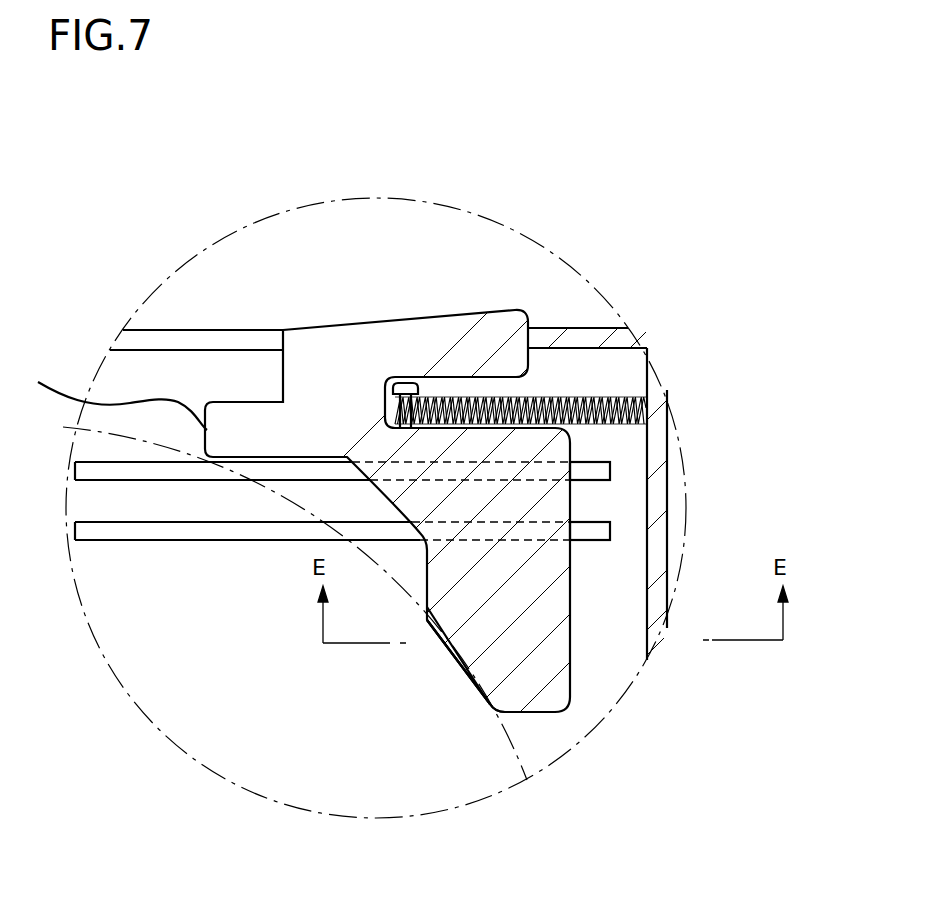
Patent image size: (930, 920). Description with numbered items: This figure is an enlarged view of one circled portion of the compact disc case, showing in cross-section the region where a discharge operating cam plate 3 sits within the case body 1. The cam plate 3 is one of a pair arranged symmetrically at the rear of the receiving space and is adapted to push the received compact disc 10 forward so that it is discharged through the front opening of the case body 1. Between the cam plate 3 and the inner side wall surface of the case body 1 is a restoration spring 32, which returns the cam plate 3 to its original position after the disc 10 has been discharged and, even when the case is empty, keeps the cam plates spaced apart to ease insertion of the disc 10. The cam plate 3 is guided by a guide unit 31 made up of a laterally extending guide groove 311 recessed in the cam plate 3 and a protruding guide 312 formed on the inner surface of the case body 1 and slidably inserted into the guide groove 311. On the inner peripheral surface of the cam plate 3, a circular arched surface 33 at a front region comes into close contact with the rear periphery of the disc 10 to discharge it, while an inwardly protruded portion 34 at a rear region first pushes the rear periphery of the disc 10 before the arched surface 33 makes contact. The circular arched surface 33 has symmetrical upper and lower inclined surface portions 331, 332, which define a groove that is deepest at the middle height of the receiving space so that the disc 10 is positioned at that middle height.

The case body 1 is at (668, 530).
The discharge operating cam plate 3 is at (523, 637).
The compact disc 10 is at (507, 740).
The guide unit 31 is at (467, 470).
The guide groove 311 is at (503, 460).
The protruding guide 312 is at (606, 470).
The restoration spring 32 is at (603, 400).
The circular arched surface 33 is at (488, 684).
The upper inclined surface portion 331 is at (450, 647).
The lower inclined surface portion 332 is at (403, 758).
The inwardly protruded portion 34 is at (107, 398).